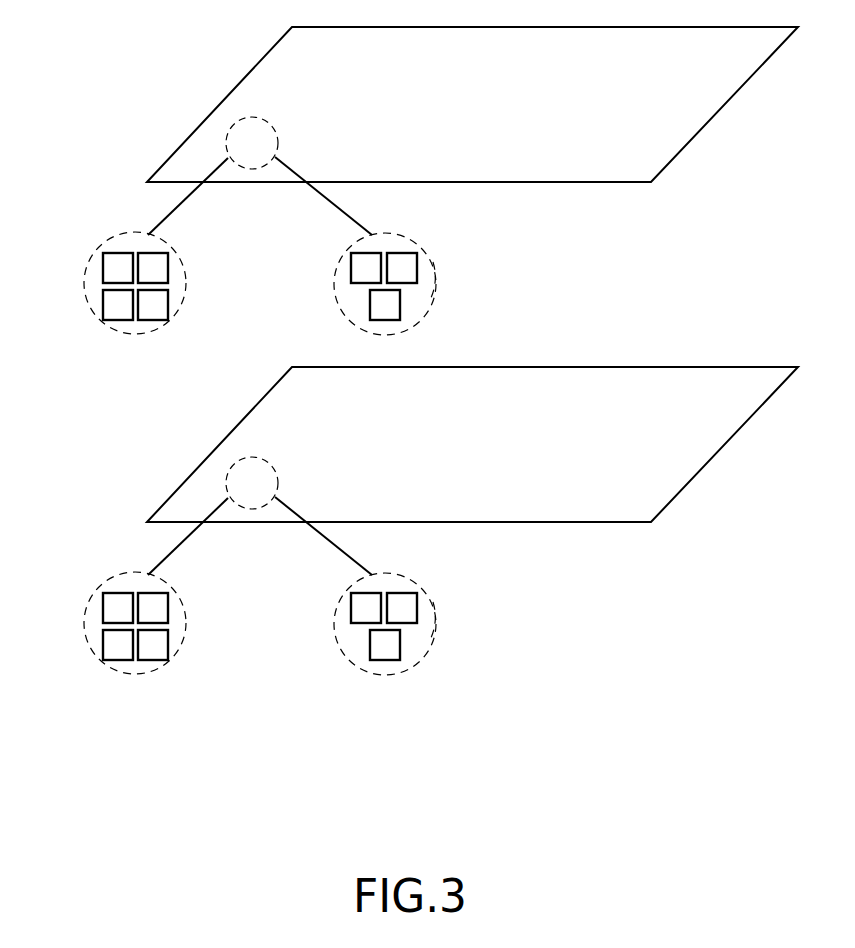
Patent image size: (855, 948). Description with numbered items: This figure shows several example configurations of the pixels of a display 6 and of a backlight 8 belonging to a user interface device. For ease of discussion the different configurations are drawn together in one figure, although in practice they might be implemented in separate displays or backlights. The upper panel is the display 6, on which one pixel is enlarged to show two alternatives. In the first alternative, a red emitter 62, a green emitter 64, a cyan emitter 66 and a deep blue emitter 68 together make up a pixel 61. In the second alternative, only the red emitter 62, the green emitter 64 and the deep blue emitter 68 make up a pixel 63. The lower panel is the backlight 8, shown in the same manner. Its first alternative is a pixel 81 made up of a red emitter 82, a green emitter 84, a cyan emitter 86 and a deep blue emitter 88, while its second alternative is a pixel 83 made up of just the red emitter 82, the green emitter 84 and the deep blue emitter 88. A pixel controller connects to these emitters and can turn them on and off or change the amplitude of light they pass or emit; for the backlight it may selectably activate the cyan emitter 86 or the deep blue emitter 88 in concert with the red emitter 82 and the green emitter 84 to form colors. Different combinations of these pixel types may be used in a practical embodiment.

The display 6 is at (167, 156).
The pixel 61 is at (268, 122).
The red emitter 62 is at (103, 266).
The pixel 63 is at (433, 275).
The green emitter 64 is at (168, 267).
The cyan emitter 66 is at (103, 306).
The deep blue emitter 68 is at (168, 307).
The backlight 8 is at (167, 496).
The pixel 81 is at (268, 462).
The red emitter 82 is at (103, 606).
The pixel 83 is at (433, 615).
The green emitter 84 is at (168, 607).
The cyan emitter 86 is at (103, 646).
The deep blue emitter 88 is at (168, 647).